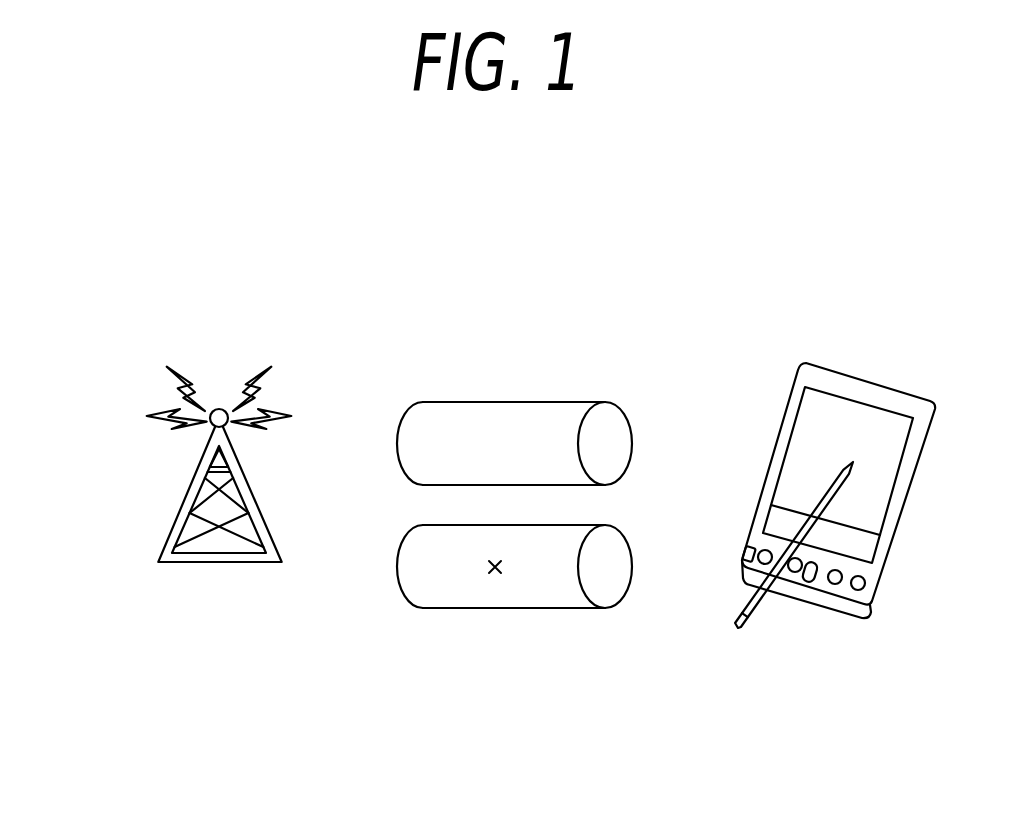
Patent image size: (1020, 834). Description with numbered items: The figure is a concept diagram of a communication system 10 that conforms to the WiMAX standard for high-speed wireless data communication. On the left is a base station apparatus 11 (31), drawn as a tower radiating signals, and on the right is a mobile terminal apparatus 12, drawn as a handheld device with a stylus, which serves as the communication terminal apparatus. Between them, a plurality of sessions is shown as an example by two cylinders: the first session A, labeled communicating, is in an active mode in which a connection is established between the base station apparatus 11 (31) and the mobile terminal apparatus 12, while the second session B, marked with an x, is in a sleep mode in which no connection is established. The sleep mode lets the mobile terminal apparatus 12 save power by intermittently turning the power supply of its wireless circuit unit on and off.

The communication system 10 is at (672, 323).
The base station apparatus 11 is at (187, 502).
The base station apparatus 31 is at (170, 464).
The mobile terminal apparatus 12 is at (879, 386).
The first session A is at (503, 402).
The second session B is at (503, 608).